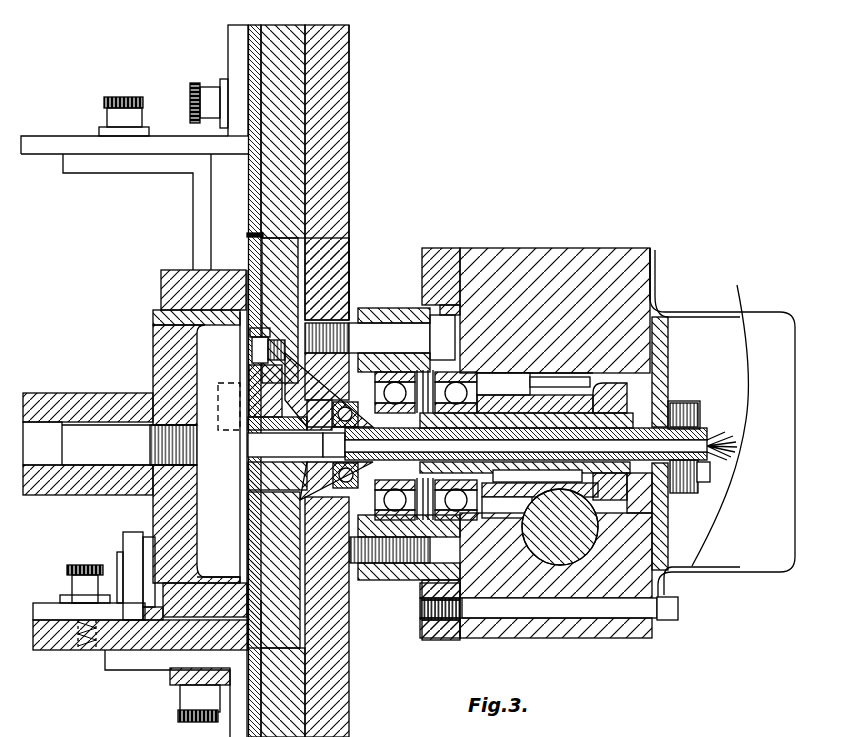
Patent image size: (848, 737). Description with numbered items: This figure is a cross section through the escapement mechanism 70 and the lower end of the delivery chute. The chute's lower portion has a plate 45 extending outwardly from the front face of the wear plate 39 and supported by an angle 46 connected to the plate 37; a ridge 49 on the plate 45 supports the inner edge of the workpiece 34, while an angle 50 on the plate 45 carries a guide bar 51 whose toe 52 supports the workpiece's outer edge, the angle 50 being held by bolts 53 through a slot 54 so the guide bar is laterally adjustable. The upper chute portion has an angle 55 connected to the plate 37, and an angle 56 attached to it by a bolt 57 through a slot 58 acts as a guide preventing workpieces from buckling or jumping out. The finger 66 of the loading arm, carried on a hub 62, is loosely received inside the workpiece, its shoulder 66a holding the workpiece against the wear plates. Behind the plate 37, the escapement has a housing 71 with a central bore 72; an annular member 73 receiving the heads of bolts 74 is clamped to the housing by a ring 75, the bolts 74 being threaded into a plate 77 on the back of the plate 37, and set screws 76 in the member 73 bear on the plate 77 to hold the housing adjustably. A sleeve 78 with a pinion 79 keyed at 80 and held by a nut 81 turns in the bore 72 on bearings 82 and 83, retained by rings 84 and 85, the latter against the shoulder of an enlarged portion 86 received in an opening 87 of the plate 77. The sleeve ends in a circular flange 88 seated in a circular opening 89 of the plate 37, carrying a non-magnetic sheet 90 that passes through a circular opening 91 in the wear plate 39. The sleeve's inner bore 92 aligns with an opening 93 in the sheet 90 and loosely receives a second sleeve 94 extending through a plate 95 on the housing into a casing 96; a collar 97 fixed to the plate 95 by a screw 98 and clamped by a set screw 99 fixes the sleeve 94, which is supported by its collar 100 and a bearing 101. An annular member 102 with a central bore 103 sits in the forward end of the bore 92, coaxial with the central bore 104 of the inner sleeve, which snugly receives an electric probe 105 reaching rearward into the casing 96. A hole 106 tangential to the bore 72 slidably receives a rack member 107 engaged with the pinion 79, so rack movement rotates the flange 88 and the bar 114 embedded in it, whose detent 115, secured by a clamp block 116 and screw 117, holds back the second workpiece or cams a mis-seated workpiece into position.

The workpiece 34 is at (165, 270).
The plate 37 is at (303, 86).
The wear plate 39 is at (256, 47).
The plate 45 is at (40, 651).
The angle 46 is at (147, 672).
The ridge 49 is at (262, 624).
The angle 50 is at (123, 538).
The guide bar 51 is at (148, 537).
The toe 52 is at (205, 600).
The bolts 53 is at (75, 567).
The slot 54 is at (36, 615).
The angle 55 is at (228, 58).
The angle 56 is at (160, 175).
The bolt 57 is at (112, 98).
The slot 58 is at (43, 150).
The hub 62 is at (45, 393).
The finger 66 is at (155, 350).
The shoulder 66a is at (158, 312).
The escapement mechanism 70 is at (655, 244).
The housing 71 is at (548, 282).
The central bore 72 is at (503, 372).
The annular member 73 is at (395, 308).
The bolts 74 is at (396, 347).
The ring 75 is at (443, 250).
The set screws 76 is at (380, 580).
The plate 77 is at (350, 134).
The sleeve 78 is at (503, 384).
The pinion 79 is at (570, 378).
The key 80 is at (525, 490).
The nut 81 is at (612, 384).
The antifriction bearing 82 is at (470, 521).
The antifriction bearing 83 is at (327, 568).
The ring 84 is at (460, 372).
The ring 85 is at (394, 382).
The enlarged portion 86 is at (327, 376).
The opening 87 is at (335, 490).
The circular flange 88 is at (318, 252).
The circular opening 89 is at (291, 237).
The sheet 90 is at (244, 290).
The circular opening 91 is at (250, 234).
The inner bore 92 is at (537, 426).
The opening 93 is at (248, 506).
The second sleeve 94 is at (710, 440).
The plate 95 is at (668, 362).
The casing 96 is at (739, 312).
The collar 97 is at (699, 406).
The screw 98 is at (710, 480).
The set screw 99 is at (683, 403).
The collar 100 is at (274, 570).
The antifriction bearing 101 is at (358, 474).
The annular member 102 is at (277, 453).
The central bore 103 is at (249, 455).
The central bore 104 is at (526, 444).
The electric probe 105 is at (632, 478).
The hole 106 is at (585, 545).
The rack member 107 is at (577, 540).
The bar 114 is at (268, 391).
The detent 115 is at (228, 383).
The clamp block 116 is at (260, 334).
The screw 117 is at (252, 347).